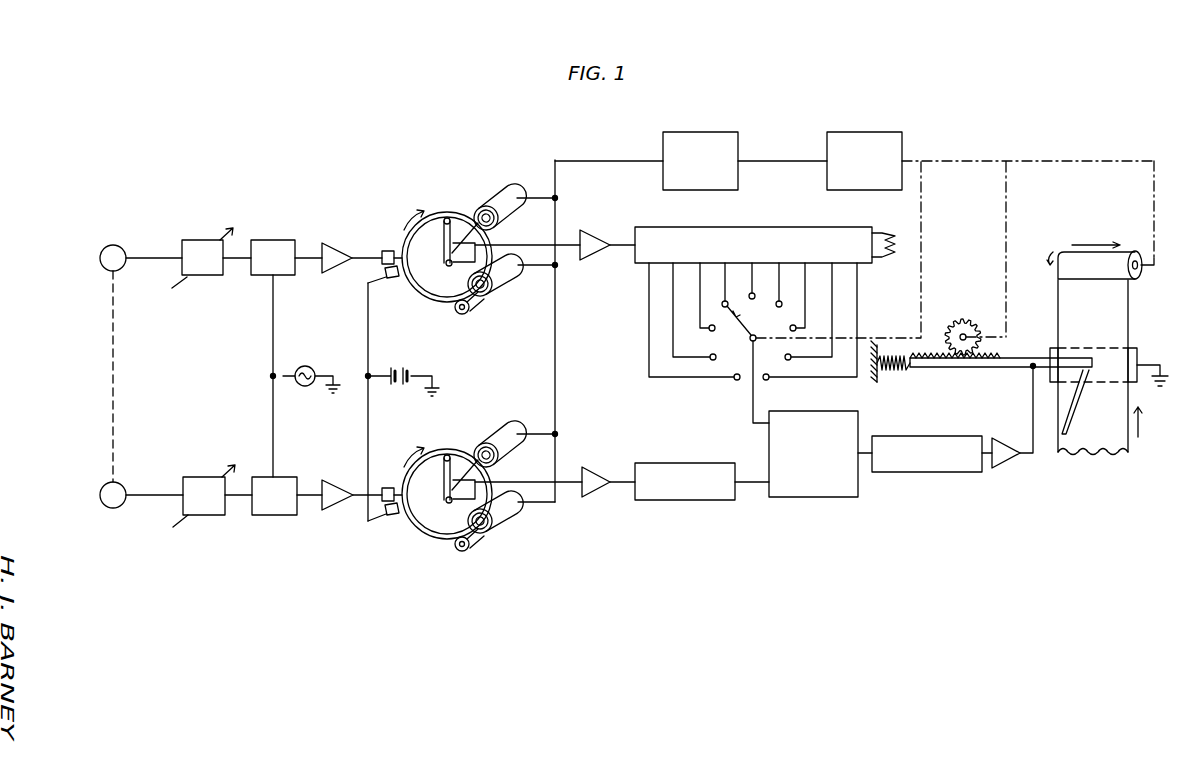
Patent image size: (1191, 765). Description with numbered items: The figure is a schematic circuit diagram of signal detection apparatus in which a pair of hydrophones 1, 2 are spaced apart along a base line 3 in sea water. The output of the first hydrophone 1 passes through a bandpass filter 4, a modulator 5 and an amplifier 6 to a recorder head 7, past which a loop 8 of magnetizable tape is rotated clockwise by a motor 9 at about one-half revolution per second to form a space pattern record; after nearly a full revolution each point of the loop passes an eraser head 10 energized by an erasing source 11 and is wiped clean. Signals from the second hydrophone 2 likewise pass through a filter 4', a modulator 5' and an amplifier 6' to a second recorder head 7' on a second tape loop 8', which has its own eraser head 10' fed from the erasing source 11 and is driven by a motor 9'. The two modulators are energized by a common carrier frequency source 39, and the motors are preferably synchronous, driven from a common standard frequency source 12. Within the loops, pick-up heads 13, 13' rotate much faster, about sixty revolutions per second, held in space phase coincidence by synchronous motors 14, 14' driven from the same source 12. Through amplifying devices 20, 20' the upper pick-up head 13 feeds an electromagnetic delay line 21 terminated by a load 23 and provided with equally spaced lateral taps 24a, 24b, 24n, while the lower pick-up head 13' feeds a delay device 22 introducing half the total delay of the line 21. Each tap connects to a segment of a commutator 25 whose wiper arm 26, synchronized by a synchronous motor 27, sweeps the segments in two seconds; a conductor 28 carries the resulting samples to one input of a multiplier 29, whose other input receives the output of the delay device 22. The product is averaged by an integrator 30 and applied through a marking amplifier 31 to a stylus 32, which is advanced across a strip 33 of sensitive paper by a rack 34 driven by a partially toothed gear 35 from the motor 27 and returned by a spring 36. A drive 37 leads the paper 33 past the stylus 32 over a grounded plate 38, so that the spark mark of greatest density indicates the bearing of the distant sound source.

The hydrophone 1 is at (108, 246).
The hydrophone 2 is at (108, 506).
The base line 3 is at (114, 360).
The bandpass filter 4 is at (202, 251).
The modulator 5 is at (273, 244).
The amplifier 6 is at (337, 243).
The recorder head 7 is at (386, 243).
The loop of magnetizable tape 8 is at (447, 244).
The motor 9 is at (506, 282).
The eraser head 10 is at (383, 289).
The erasing source 11 is at (408, 369).
The standard frequency source 12 is at (728, 133).
The pick-up head 13 is at (443, 242).
The synchronous motor 14 is at (513, 192).
The amplifying device 20 is at (595, 229).
The delay line 21 is at (747, 227).
The delay device 22 is at (660, 463).
The load 23 is at (886, 232).
The lateral tap 24a is at (648, 292).
The lateral tap 24b is at (672, 306).
The delay line tap 24n is at (858, 296).
The commutator 25 is at (735, 335).
The wiper arm 26 is at (743, 330).
The synchronous motor 27 is at (900, 133).
The conductor 28 is at (752, 400).
The multiplier 29 is at (787, 411).
The integrator 30 is at (930, 472).
The marking amplifier 31 is at (1006, 467).
The stylus 32 is at (1092, 375).
The strip of sensitive paper 33 is at (1130, 313).
The rack 34 is at (962, 367).
The gear 35 is at (965, 319).
The spring 36 is at (897, 371).
The drive 37 is at (1066, 161).
The plate 38 is at (1140, 357).
The carrier frequency source 39 is at (312, 368).
The filter 4' is at (204, 487).
The modulator 5' is at (277, 481).
The amplifier 6' is at (337, 479).
The second recorder head 7' is at (386, 480).
The second loop of magnetizable tape 8' is at (447, 479).
The motor 9' is at (505, 519).
The eraser head 10' is at (383, 526).
The pick-up head 13' is at (443, 479).
The synchronous motor 14' is at (513, 427).
The amplifier 20' is at (597, 466).